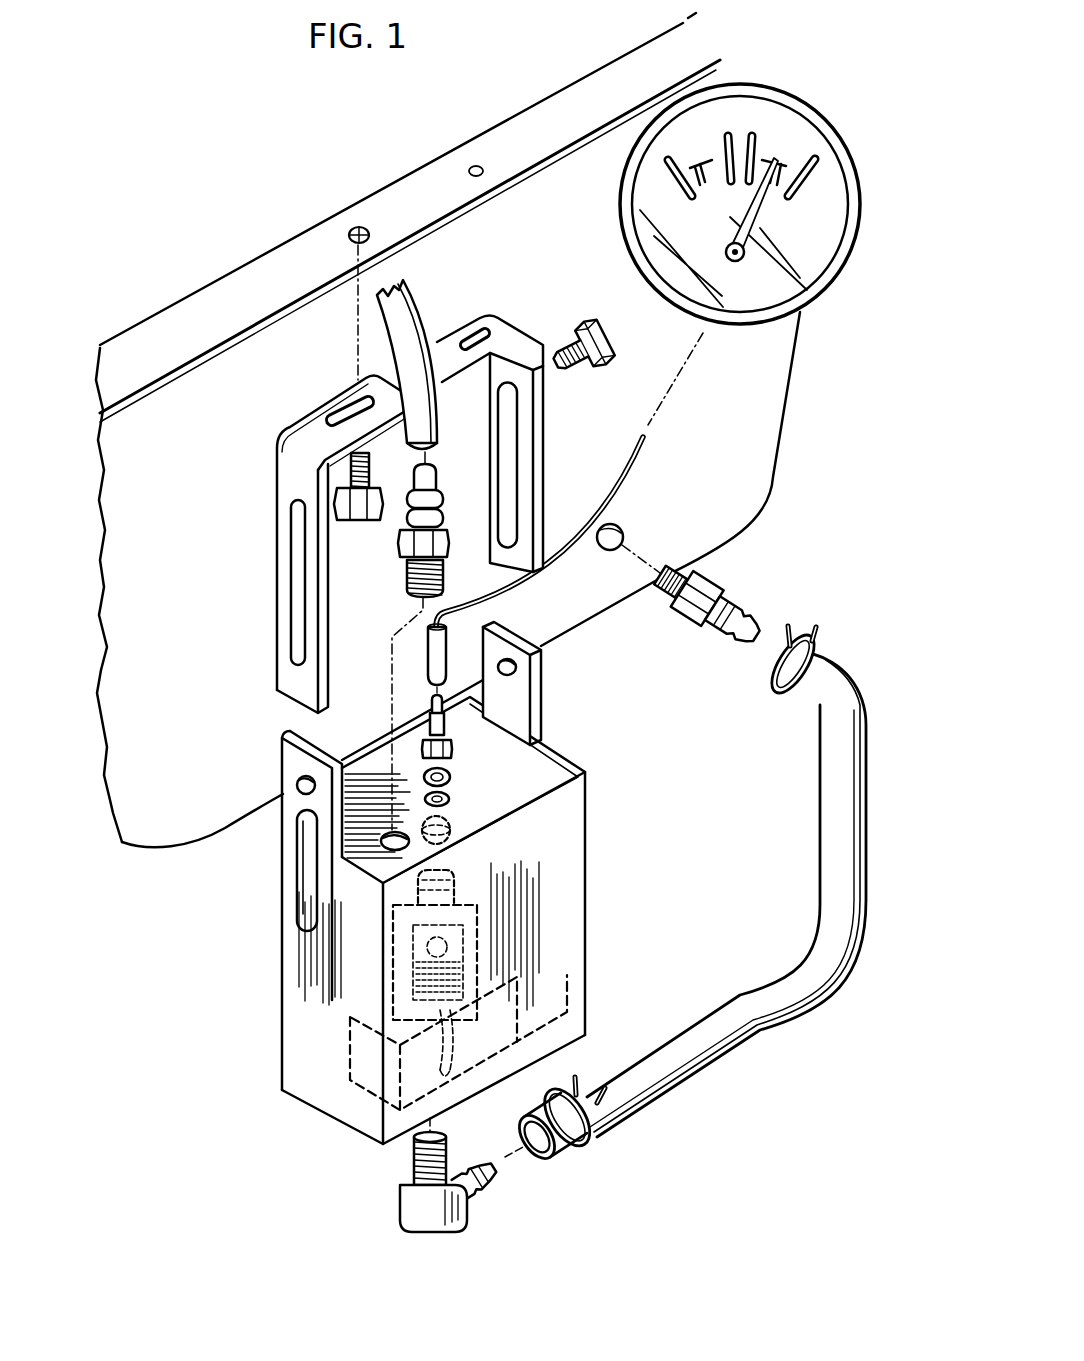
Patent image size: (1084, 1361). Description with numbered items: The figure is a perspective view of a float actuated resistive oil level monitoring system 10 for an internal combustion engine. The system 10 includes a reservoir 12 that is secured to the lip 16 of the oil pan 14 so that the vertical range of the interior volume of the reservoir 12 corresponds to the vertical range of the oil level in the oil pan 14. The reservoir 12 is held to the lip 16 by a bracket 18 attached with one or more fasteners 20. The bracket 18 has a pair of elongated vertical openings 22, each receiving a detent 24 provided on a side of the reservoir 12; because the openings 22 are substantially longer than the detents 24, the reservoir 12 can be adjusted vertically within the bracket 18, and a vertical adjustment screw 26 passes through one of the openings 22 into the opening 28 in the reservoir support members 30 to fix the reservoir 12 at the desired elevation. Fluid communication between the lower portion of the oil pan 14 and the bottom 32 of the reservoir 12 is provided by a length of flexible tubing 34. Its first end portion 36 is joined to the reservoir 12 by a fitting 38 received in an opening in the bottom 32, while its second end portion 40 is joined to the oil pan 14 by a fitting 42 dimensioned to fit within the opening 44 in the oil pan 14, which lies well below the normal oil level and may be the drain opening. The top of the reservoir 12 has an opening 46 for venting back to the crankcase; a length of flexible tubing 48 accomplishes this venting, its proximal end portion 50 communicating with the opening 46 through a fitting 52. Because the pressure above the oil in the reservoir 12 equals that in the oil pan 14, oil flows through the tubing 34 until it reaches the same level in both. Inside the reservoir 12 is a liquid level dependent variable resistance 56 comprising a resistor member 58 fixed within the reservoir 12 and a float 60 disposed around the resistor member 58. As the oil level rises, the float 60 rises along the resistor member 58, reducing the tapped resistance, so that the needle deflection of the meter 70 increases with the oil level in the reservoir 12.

The oil level monitoring system 10 is at (477, 430).
The reservoir 12 is at (442, 912).
The oil pan 14 is at (477, 430).
The lip 16 is at (188, 366).
The bracket 18 is at (307, 545).
The fasteners 20 is at (357, 522).
The elongated vertical openings 22 is at (297, 590).
The detent 24 is at (315, 873).
The vertical adjustment screw 26 is at (600, 357).
The opening 28 is at (515, 670).
The reservoir support members 30 is at (547, 683).
The bottom 32 is at (335, 1120).
The flexible tubing 34 is at (857, 806).
The first end portion 36 is at (565, 1160).
The fitting 38 is at (455, 1222).
The second end portion 40 is at (770, 670).
The fitting 42 is at (722, 597).
The opening 44 is at (622, 530).
The opening 46 is at (338, 845).
The flexible tubing 48 is at (410, 310).
The proximal end portion 50 is at (433, 432).
The fitting 52 is at (412, 572).
The liquid level dependent variable resistance 56 is at (482, 948).
The resistor member 58 is at (455, 983).
The float 60 is at (580, 1025).
The meter 70 is at (870, 205).